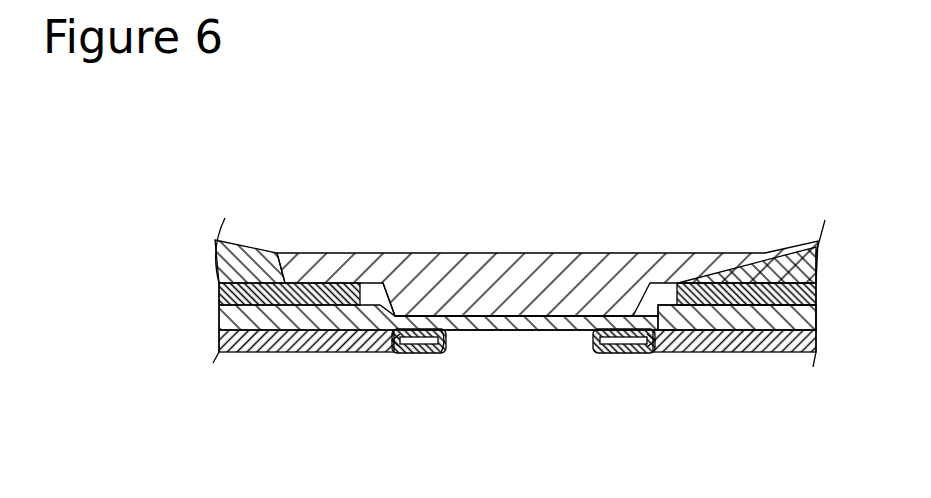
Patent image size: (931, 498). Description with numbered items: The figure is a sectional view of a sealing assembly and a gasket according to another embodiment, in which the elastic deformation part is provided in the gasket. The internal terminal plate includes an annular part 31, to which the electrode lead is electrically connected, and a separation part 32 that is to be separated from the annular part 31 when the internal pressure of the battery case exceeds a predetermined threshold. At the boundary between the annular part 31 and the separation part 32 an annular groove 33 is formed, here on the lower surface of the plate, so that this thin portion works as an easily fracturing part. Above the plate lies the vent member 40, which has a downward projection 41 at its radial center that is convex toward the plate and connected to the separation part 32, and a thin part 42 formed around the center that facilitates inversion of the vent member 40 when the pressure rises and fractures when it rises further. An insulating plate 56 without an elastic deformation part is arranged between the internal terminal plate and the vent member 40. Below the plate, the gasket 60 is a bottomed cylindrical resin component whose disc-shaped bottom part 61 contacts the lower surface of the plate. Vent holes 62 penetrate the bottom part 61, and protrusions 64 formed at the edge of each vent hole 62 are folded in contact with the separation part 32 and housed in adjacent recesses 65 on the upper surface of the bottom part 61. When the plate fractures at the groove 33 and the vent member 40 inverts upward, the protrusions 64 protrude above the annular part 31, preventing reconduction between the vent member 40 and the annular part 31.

The annular part 31 is at (297, 352).
The separation part 32 is at (560, 330).
The groove 33 is at (391, 281).
The vent member 40 is at (684, 252).
The downward projection 41 is at (505, 307).
The thin part 42 is at (810, 243).
The insulating plate 56 is at (245, 280).
The gasket 60 is at (755, 352).
The bottom part 61 is at (248, 352).
The vent hole 62 is at (444, 343).
The protrusion 64 is at (420, 353).
The recess 65 is at (392, 352).